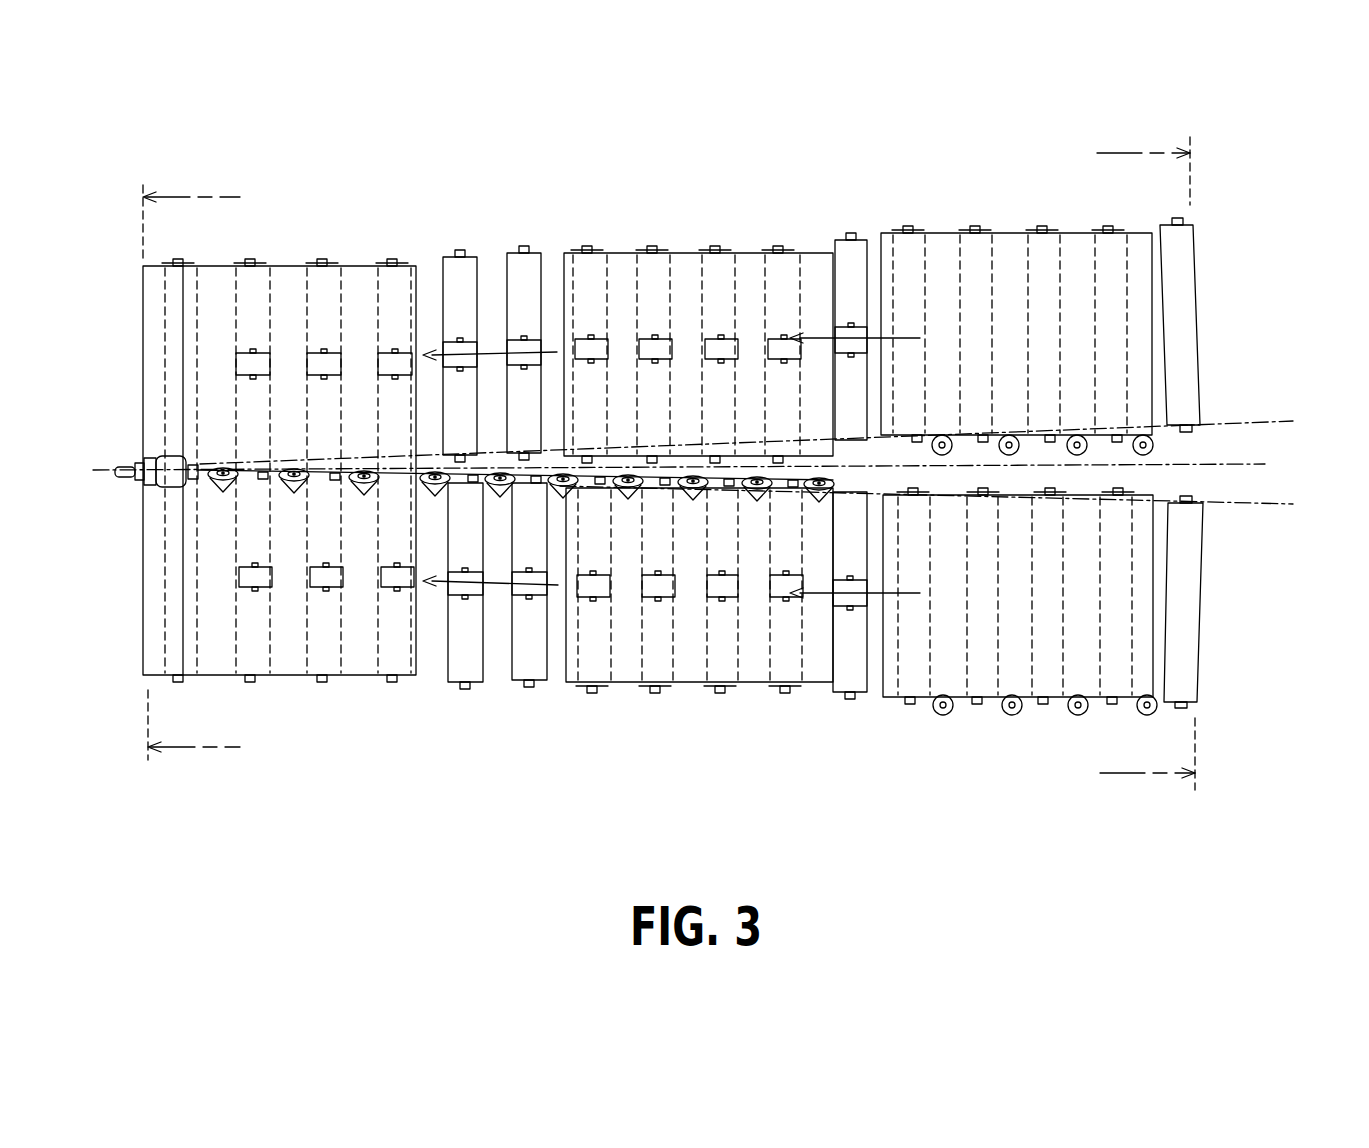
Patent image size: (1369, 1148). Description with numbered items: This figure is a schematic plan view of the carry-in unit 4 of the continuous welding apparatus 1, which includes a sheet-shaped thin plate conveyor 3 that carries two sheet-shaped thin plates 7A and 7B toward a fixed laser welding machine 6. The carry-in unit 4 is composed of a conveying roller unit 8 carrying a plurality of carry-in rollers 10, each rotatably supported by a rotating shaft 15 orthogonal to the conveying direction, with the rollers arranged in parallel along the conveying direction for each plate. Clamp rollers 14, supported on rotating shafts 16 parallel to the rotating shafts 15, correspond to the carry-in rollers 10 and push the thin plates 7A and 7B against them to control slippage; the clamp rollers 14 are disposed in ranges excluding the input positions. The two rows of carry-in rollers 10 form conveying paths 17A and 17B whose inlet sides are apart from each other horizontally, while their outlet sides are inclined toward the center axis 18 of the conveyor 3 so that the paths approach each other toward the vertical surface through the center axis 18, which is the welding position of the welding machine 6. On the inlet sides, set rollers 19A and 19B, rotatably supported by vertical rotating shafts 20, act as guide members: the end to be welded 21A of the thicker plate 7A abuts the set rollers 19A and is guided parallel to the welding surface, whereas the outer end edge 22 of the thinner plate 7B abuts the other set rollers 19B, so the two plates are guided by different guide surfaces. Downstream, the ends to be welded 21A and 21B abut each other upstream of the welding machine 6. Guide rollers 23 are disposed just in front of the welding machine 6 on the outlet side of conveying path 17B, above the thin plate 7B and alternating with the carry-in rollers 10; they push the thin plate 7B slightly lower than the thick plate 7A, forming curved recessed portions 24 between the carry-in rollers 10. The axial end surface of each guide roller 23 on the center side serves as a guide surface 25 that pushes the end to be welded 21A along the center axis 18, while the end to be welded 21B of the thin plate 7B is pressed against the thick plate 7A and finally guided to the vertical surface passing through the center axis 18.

The continuous welding apparatus 1 is at (665, 143).
The sheet-shaped thin plate conveyor 3 is at (725, 212).
The carry-in unit 4 is at (716, 593).
The laser welding machine 6 is at (157, 462).
The sheet-shaped thin plate (thick plate) 7A is at (1138, 262).
The sheet-shaped thin plate (thin plate) 7B is at (1138, 592).
The conveying roller unit 8 is at (1207, 390).
The carry-in roller 10 is at (1180, 652).
The clamp roller 14 is at (716, 597).
The rotating shaft 15 is at (977, 704).
The rotating shaft 16 is at (722, 602).
The conveying path 17A is at (205, 195).
The conveying path 17B is at (205, 752).
The center axis 18 is at (1265, 464).
The set roller 19A is at (1155, 445).
The set roller 19B is at (943, 716).
The rotating shaft 20 is at (1012, 716).
The end to be welded 21A is at (1100, 447).
The end to be welded 21B is at (1105, 493).
The outer end edge 22 is at (897, 704).
The guide roller 23 is at (222, 496).
The recessed portion 24 is at (290, 580).
The guide surface 25 is at (222, 466).